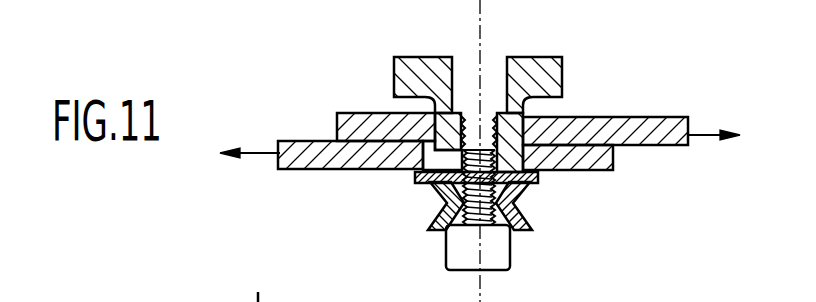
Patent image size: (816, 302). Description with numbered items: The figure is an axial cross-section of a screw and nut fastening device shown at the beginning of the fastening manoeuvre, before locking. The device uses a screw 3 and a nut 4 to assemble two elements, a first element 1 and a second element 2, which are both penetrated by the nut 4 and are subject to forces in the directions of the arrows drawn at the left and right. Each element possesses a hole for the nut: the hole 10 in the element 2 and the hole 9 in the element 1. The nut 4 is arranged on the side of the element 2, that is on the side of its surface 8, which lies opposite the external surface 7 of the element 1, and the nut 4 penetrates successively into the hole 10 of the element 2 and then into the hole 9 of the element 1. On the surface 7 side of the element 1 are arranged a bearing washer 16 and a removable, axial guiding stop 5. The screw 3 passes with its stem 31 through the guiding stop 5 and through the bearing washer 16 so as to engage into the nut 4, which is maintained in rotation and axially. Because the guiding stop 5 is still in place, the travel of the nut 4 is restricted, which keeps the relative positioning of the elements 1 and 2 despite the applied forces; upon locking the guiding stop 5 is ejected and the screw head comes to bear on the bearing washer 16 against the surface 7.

The element 1 is at (590, 166).
The element 2 is at (643, 121).
The screw 3 is at (494, 273).
The nut 4 is at (417, 68).
The guiding stop 5 is at (429, 218).
The external surface 7 is at (318, 170).
The surface 8 is at (355, 113).
The hole 9 is at (403, 170).
The hole 10 is at (533, 128).
The bearing washer 16 is at (541, 178).
The stem 31 is at (490, 222).